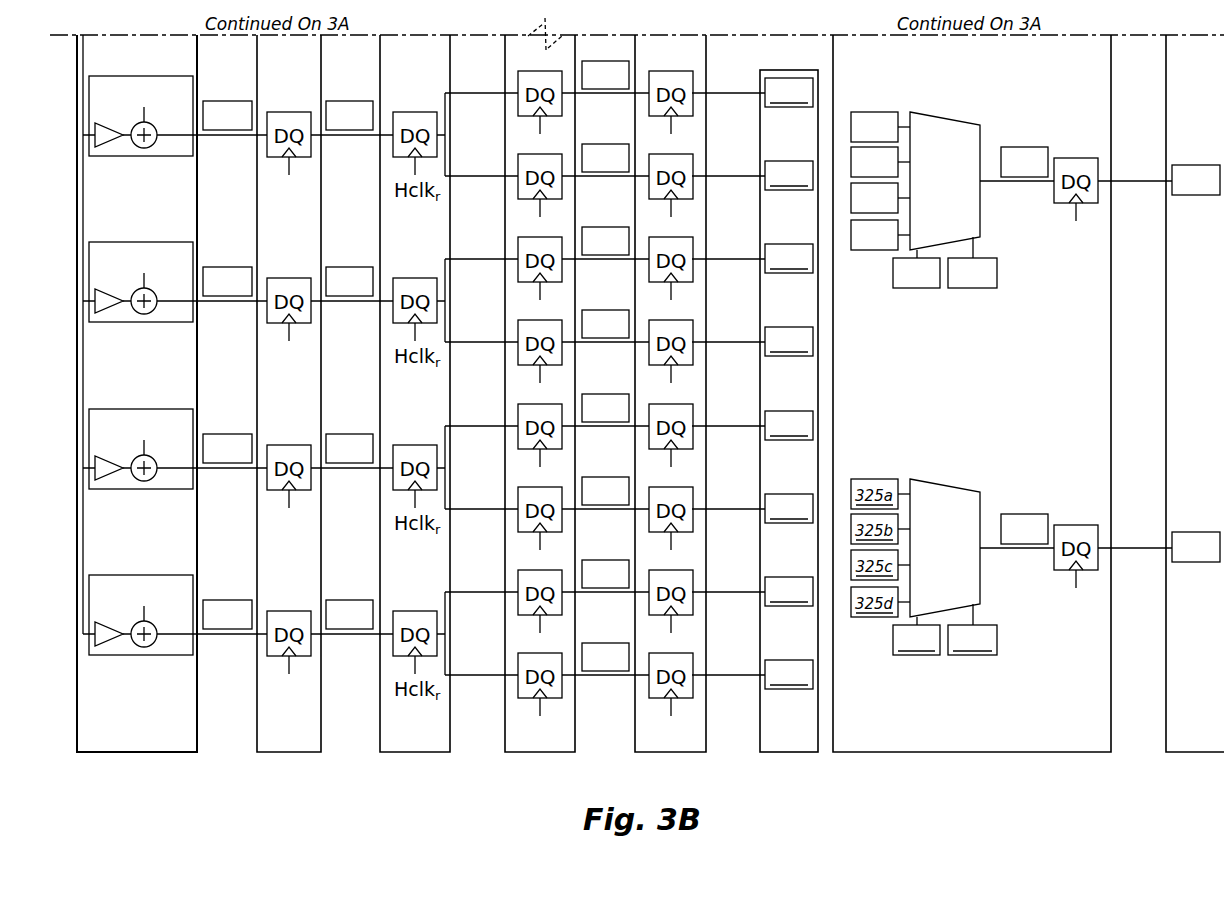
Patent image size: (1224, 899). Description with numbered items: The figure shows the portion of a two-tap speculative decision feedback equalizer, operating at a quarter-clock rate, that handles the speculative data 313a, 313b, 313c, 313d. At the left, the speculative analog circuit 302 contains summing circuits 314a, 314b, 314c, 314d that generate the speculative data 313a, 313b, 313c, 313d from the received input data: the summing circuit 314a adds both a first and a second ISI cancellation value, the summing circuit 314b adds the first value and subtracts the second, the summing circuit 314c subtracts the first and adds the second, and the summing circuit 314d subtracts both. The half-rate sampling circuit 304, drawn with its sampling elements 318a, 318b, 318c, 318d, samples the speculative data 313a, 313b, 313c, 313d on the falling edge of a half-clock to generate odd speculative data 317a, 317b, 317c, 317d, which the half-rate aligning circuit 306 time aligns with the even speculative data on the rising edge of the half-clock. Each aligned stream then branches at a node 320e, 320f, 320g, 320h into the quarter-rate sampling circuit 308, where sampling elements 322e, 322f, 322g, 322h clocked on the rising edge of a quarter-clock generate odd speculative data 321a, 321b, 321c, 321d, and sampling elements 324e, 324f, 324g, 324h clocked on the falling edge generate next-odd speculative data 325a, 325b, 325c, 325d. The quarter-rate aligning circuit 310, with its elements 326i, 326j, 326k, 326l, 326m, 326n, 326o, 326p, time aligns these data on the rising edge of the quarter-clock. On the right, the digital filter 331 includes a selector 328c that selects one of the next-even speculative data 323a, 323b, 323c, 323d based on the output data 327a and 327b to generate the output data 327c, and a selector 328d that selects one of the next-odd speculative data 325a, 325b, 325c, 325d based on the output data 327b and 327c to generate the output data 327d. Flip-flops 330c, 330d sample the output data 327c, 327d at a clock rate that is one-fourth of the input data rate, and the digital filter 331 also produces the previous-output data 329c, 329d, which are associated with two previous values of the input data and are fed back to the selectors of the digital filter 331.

The speculative analog circuit 302 is at (112, 760).
The half-rate sampling circuit 304 is at (293, 760).
The half-rate aligning circuit 306 is at (408, 760).
The quarter-rate sampling circuit 308 is at (535, 760).
The quarter-rate aligning circuit 310 is at (665, 760).
The speculative data 313a is at (247, 127).
The speculative data 313b is at (247, 293).
The speculative data 313c is at (247, 460).
The speculative data 313d is at (247, 626).
The summing circuit 314a is at (119, 161).
The summing circuit 314b is at (119, 327).
The summing circuit 314c is at (119, 494).
The summing circuit 314d is at (119, 660).
The odd speculative data 317a is at (368, 127).
The odd speculative data 317b is at (368, 293).
The odd speculative data 317c is at (368, 460).
The odd speculative data 317d is at (368, 626).
The flip-flop 318a is at (311, 150).
The flip-flop 318b is at (311, 316).
The flip-flop 318c is at (311, 483).
The flip-flop 318d is at (311, 649).
The fan-out node 320e is at (446, 121).
The fan-out node 320f is at (446, 287).
The fan-out node 320g is at (446, 454).
The fan-out node 320h is at (446, 620).
The odd speculative data 321a is at (624, 85).
The odd speculative data 321b is at (624, 251).
The odd speculative data 321c is at (624, 418).
The odd speculative data 321d is at (624, 584).
The rising-edge flip-flop 322e is at (562, 105).
The rising-edge flip-flop 322f is at (562, 271).
The rising-edge flip-flop 322g is at (562, 438).
The rising-edge flip-flop 322h is at (562, 604).
The next-even speculative data 323a is at (893, 138).
The next-even speculative data 323b is at (893, 173).
The next-even speculative data 323c is at (893, 209).
The next-even speculative data 323d is at (893, 246).
The falling-edge flip-flop 324e is at (562, 188).
The falling-edge flip-flop 324f is at (562, 354).
The falling-edge flip-flop 324g is at (562, 521).
The falling-edge flip-flop 324h is at (562, 687).
The next-odd speculative data 325a is at (624, 168).
The next-odd speculative data 325b is at (624, 334).
The next-odd speculative data 325c is at (624, 501).
The next-odd speculative data 325d is at (624, 667).
The output flip-flop 326i is at (692, 75).
The output flip-flop 326j is at (692, 158).
The output flip-flop 326k is at (692, 241).
The output flip-flop 326l is at (692, 324).
The output flip-flop 326m is at (692, 408).
The output flip-flop 326n is at (692, 491).
The output flip-flop 326o is at (692, 574).
The output flip-flop 326p is at (692, 657).
The output data 327a is at (935, 284).
The output data 327b is at (992, 284).
The output data 327c is at (1043, 173).
The output data 327d is at (1043, 540).
The selector 328c is at (921, 112).
The selector 328d is at (921, 479).
The previous-output data 329c is at (1177, 191).
The previous-output data 329d is at (1177, 558).
The flip-flop 330c is at (1098, 164).
The flip-flop 330d is at (1098, 531).
The digital filter 331 is at (990, 760).